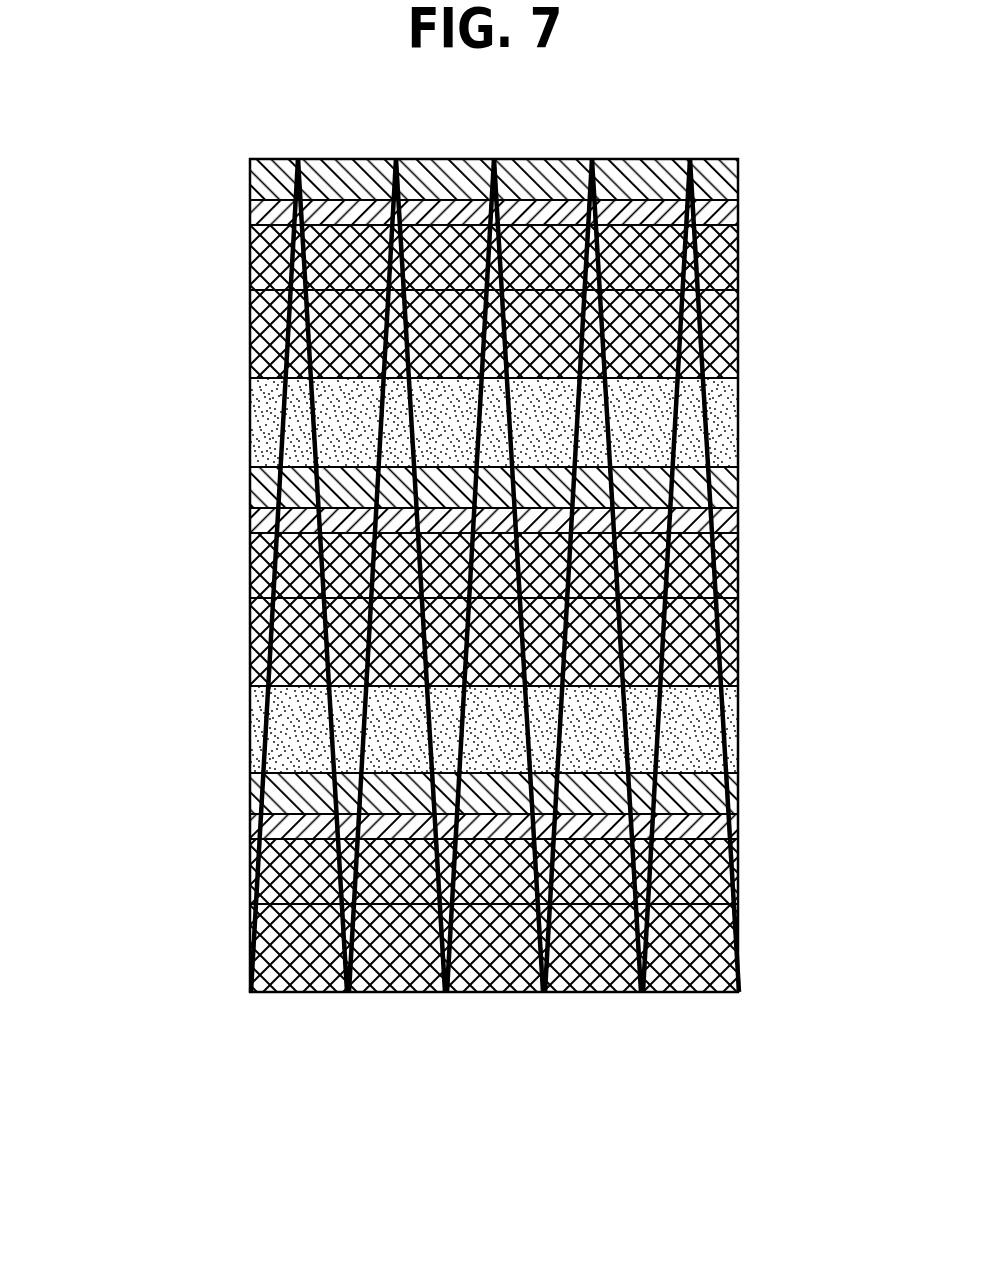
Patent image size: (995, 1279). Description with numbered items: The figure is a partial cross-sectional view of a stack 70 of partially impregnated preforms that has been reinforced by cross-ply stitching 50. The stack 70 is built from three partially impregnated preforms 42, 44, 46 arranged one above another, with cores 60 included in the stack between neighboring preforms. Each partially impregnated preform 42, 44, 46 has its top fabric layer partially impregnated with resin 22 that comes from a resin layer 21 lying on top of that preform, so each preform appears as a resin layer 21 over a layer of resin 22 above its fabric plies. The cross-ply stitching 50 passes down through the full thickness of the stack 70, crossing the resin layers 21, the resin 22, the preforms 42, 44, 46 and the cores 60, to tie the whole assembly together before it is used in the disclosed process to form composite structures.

The resin layer 21 is at (247, 182).
The resin 22 is at (247, 214).
The partially impregnated preform 42 is at (778, 886).
The partially impregnated preform 44 is at (778, 578).
The partially impregnated preform 46 is at (778, 270).
The cross-ply stitching 50 is at (500, 228).
The core 60 is at (755, 430).
The stack of partially impregnated preforms 70 is at (212, 1035).